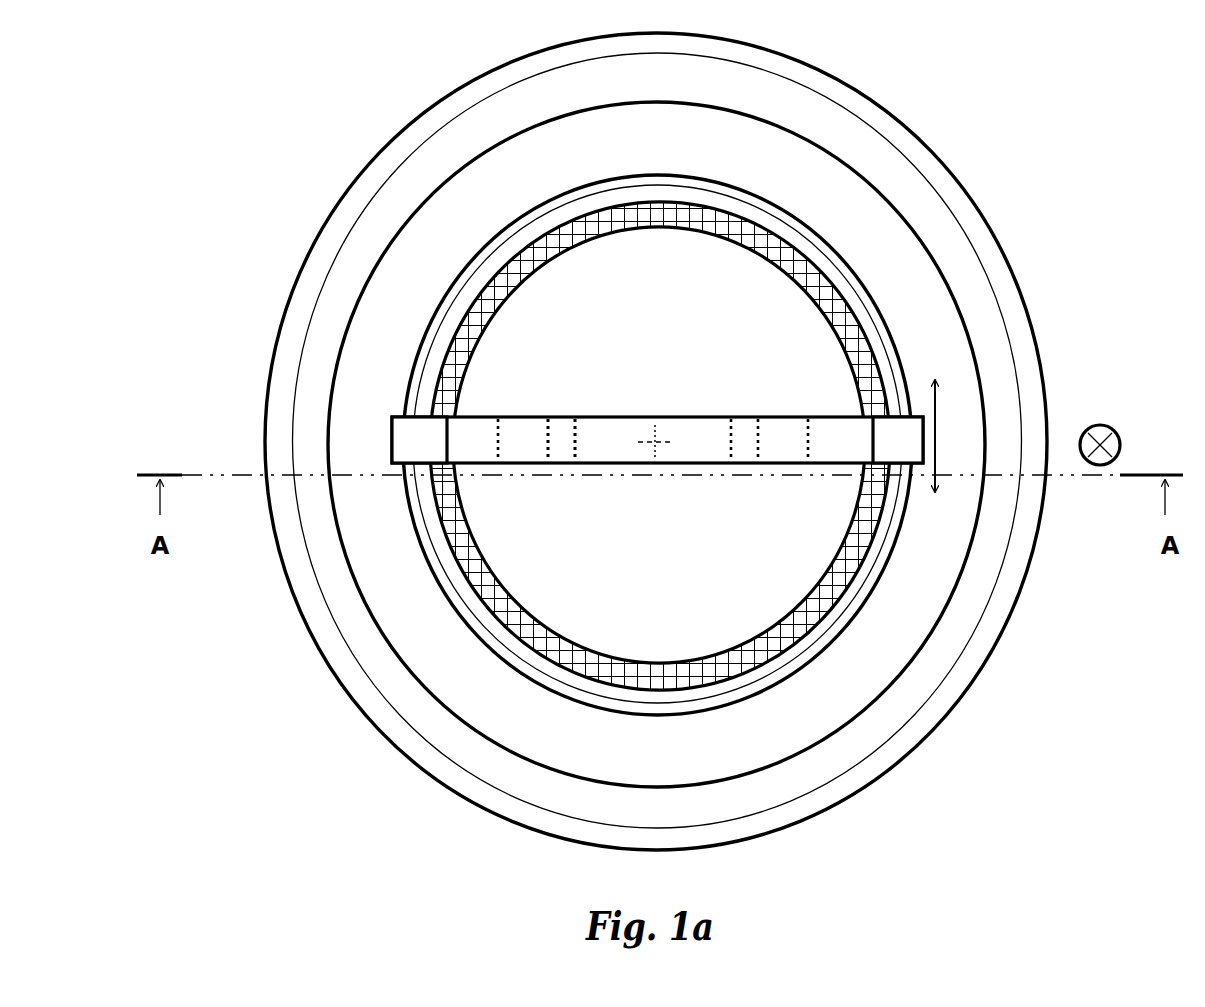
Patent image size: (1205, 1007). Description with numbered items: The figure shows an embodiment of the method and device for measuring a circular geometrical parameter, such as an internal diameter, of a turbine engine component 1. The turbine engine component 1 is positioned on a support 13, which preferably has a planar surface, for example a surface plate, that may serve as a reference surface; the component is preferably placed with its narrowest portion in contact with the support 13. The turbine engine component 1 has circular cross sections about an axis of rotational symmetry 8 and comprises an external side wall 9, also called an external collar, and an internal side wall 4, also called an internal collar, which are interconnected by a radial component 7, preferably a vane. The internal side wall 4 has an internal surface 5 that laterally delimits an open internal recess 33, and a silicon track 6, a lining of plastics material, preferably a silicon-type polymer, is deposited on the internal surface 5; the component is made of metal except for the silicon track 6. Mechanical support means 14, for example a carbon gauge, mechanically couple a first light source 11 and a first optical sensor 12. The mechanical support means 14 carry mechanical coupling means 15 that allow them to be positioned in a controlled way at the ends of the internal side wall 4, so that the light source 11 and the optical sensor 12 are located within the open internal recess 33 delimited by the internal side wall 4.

The turbine engine component 1 is at (267, 507).
The internal side wall 4 is at (505, 658).
The internal surface 5 is at (463, 596).
The silicon track 6 is at (445, 515).
The radial component 7 is at (656, 444).
The axis of rotational symmetry 8 is at (657, 438).
The external side wall 9 is at (657, 440).
The first light source 11 is at (653, 440).
The first optical sensor 12 is at (565, 438).
The support 13 is at (458, 694).
The mechanical support means 14 is at (622, 417).
The mechanical coupling means 15 is at (657, 440).
The open internal recess 33 is at (672, 550).